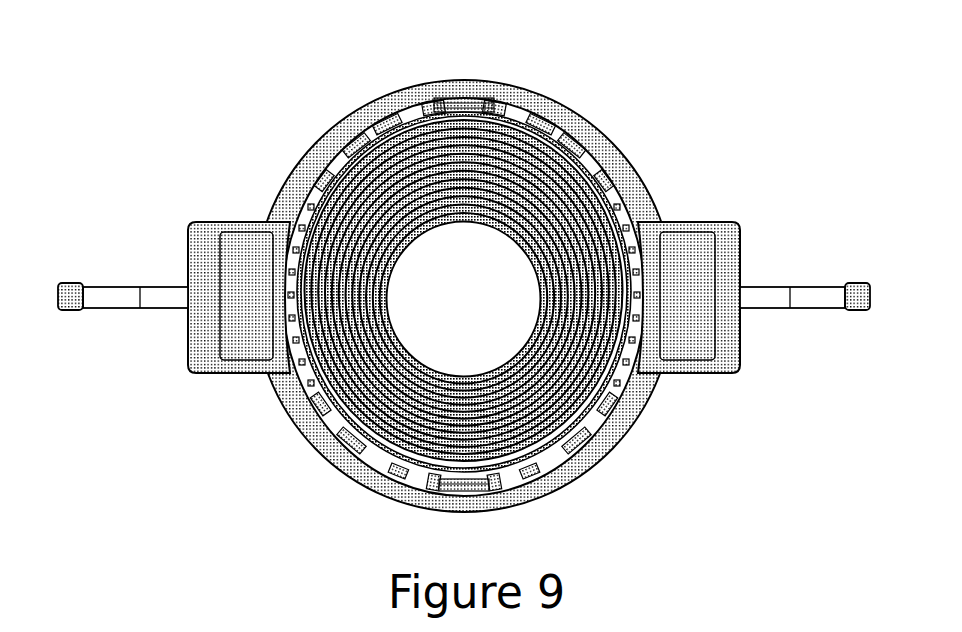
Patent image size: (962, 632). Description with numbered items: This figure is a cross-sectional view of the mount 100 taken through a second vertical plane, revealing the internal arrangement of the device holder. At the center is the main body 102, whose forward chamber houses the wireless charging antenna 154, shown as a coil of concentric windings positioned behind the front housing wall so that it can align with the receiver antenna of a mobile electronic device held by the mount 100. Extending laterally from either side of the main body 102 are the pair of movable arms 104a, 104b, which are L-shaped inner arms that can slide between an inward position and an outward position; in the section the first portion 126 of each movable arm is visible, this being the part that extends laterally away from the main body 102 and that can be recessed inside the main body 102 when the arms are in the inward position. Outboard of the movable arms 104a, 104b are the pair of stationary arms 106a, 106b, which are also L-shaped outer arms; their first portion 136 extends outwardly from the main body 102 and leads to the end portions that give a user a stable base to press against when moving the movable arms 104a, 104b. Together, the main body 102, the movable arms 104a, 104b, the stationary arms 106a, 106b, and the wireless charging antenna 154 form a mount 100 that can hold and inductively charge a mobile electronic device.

The mount 100 is at (475, 288).
The main body 102 is at (402, 495).
The movable arm 104a is at (690, 248).
The movable arm 104b is at (203, 233).
The stationary arm 106a is at (860, 290).
The stationary arm 106b is at (70, 292).
The first portion 126 is at (242, 352).
The first portion 136 is at (133, 302).
The wireless charging antenna 154 is at (497, 152).